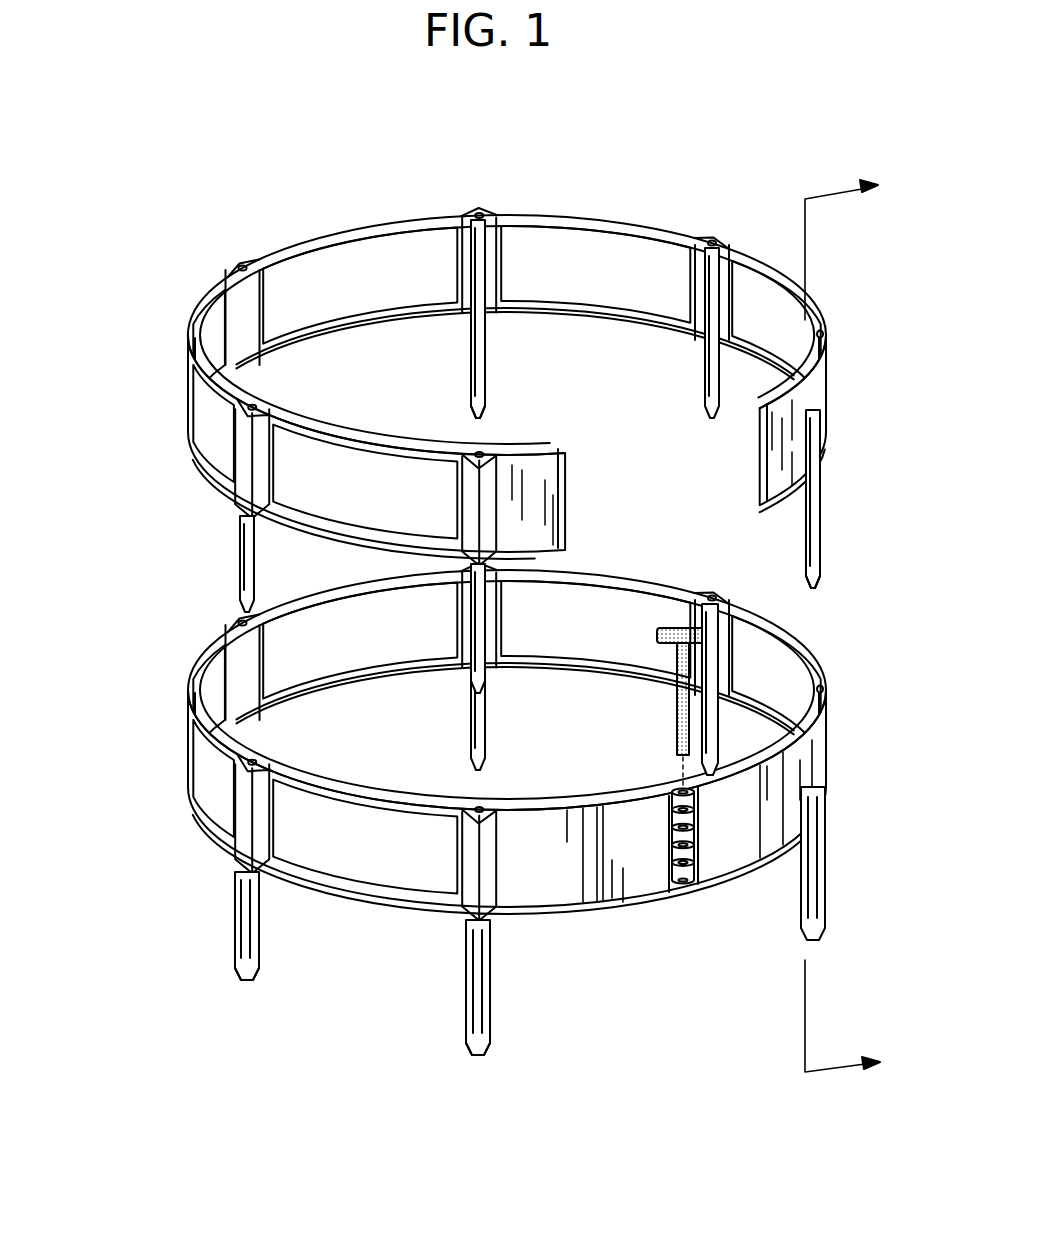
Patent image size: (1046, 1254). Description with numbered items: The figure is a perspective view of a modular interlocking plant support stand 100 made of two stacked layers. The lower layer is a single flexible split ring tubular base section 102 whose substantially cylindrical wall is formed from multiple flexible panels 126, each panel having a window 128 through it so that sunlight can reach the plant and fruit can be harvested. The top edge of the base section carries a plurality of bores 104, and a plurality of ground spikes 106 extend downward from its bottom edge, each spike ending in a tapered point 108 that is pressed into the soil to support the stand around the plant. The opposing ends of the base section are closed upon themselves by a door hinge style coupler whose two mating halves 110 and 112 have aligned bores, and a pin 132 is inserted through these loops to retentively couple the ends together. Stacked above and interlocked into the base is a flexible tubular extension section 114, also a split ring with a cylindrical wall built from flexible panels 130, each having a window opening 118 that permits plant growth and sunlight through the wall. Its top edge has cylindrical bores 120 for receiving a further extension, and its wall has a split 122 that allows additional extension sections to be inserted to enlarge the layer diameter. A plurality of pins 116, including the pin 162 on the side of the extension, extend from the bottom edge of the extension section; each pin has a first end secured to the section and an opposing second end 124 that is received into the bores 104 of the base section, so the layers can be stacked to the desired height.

The plant support stand 100 is at (224, 140).
The split ring tubular base section 102 is at (800, 770).
The bores 104 is at (826, 690).
The ground spikes 106 is at (820, 870).
The stake tip 108 is at (240, 975).
The first hinge style coupler half 110 is at (683, 882).
The second hinge style coupler half 112 is at (700, 855).
The flexible tubular extension section 114 is at (190, 333).
The pins 116 is at (480, 345).
The window openings 118 is at (618, 291).
The cylindrical bores 120 is at (240, 264).
The split 122 is at (750, 463).
The second end of pin 124 is at (480, 412).
The flexible panels 126 is at (355, 897).
The window 128 is at (386, 869).
The flexible panels 130 is at (355, 237).
The pin 132 is at (678, 715).
The upper ring stake 162 is at (245, 575).